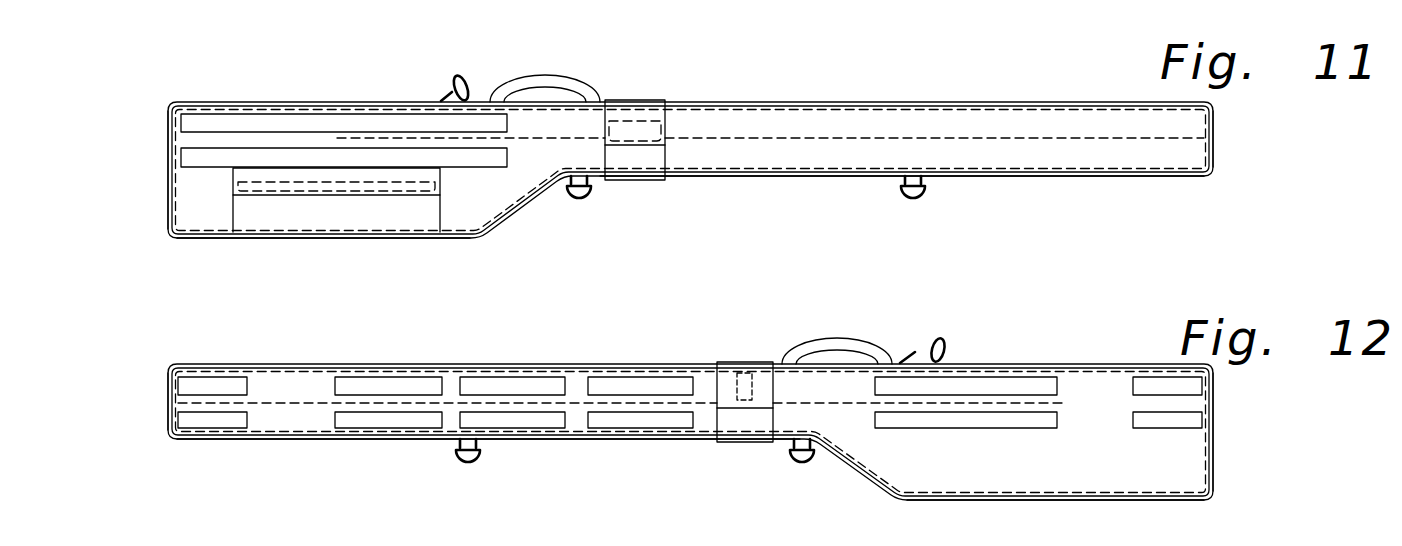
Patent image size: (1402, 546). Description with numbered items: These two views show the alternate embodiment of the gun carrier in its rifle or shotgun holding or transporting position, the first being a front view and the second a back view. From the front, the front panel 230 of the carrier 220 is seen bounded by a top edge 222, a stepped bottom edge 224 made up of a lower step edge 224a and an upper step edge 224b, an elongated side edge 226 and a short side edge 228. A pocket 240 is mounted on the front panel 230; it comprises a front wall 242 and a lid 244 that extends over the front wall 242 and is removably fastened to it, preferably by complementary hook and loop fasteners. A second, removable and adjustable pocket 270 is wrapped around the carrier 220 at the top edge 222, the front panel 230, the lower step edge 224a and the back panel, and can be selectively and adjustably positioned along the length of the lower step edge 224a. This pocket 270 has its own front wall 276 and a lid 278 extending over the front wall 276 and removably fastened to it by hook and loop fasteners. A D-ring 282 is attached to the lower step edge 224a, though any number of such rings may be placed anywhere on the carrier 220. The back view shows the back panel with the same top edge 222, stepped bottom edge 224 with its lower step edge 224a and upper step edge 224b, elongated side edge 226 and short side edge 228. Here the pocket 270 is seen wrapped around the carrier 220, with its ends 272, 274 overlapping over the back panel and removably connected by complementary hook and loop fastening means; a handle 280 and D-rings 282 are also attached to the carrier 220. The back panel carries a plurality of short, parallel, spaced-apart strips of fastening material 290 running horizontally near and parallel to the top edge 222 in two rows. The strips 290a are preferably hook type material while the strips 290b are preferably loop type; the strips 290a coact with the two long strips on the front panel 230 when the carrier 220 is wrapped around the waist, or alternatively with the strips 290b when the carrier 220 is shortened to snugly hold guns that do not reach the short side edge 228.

In FIG. 11, the carrier 220 is at (895, 89).
In FIG. 12, the carrier 220 is at (968, 346).
In FIG. 11, the top edge 222 is at (840, 95).
In FIG. 12, the top edge 222 is at (1148, 368).
In FIG. 11, the stepped bottom edge 224 is at (516, 254).
In FIG. 12, the stepped bottom edge 224 is at (542, 468).
In FIG. 11, the lower step edge 224a is at (1122, 180).
In FIG. 12, the lower step edge 224a is at (288, 442).
In FIG. 11, the upper step edge 224b is at (208, 240).
In FIG. 12, the upper step edge 224b is at (1088, 500).
In FIG. 11, the elongated side edge 226 is at (167, 153).
In FIG. 12, the elongated side edge 226 is at (1213, 448).
In FIG. 11, the short side edge 228 is at (1213, 128).
In FIG. 12, the short side edge 228 is at (168, 407).
In FIG. 11, the front panel 230 is at (578, 164).
In FIG. 11, the pocket 240 is at (327, 227).
In FIG. 11, the front wall 242 is at (412, 210).
In FIG. 11, the lid 244 is at (277, 195).
In FIG. 11, the removable and adjustable pocket 270 is at (627, 165).
In FIG. 12, the removable and adjustable pocket 270 is at (725, 432).
In FIG. 12, the pocket end 272 is at (763, 387).
In FIG. 12, the pocket end 274 is at (765, 428).
In FIG. 11, the front wall 276 is at (653, 162).
In FIG. 11, the lid 278 is at (610, 120).
In FIG. 11, the handle 280 is at (553, 73).
In FIG. 12, the handle 280 is at (848, 338).
In FIG. 11, the D-ring 282 is at (583, 202).
In FIG. 12, the D-ring 282 is at (462, 466).
In FIG. 11, the strips of fastening material 290 is at (263, 122).
In FIG. 12, the strips of fastening material 290 is at (510, 385).
In FIG. 12, the hook type strips 290a is at (235, 385).
In FIG. 12, the loop type strips 290b is at (1167, 386).